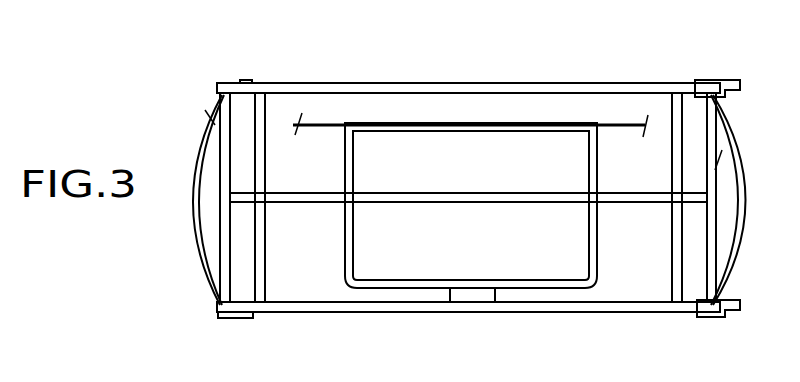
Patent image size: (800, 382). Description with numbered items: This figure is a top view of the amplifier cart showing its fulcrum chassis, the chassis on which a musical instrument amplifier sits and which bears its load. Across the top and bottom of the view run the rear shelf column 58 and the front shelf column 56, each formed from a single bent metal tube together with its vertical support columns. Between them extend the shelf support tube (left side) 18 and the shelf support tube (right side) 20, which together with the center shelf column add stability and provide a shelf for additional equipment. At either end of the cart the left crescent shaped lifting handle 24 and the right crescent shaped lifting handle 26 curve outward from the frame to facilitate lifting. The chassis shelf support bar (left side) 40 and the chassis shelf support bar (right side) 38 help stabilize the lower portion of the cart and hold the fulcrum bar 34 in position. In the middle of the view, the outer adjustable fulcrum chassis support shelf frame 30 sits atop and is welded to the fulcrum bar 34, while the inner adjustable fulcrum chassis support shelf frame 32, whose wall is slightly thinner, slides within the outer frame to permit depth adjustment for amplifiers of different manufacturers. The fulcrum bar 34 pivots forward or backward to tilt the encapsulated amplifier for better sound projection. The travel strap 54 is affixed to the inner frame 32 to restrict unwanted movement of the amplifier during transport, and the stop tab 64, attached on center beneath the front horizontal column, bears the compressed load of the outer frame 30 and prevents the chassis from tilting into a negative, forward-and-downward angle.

The shelf support tube (left side) 18 is at (264, 156).
The shelf support tube (right side) 20 is at (676, 286).
The left crescent shaped lifting handle 24 is at (196, 255).
The right crescent shaped lifting handle 26 is at (735, 245).
The outer adjustable fulcrum chassis support shelf frame 30 is at (597, 241).
The inner adjustable fulcrum chassis support shelf frame 32 is at (597, 150).
The fulcrum bar 34 is at (262, 201).
The chassis shelf support bar (right side) 38 is at (716, 160).
The chassis shelf support bar (left side) 40 is at (222, 123).
The travel strap 54 is at (322, 124).
The front shelf column 56 is at (425, 312).
The rear shelf column 58 is at (520, 84).
The stop tab 64 is at (470, 298).